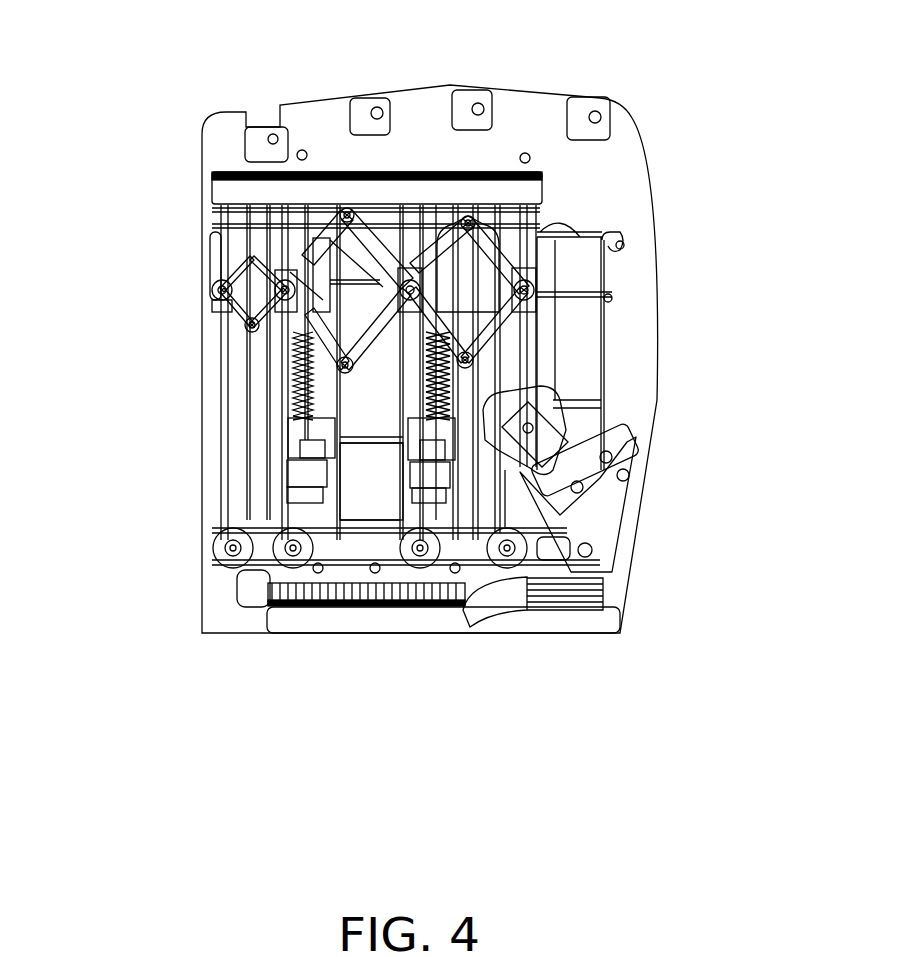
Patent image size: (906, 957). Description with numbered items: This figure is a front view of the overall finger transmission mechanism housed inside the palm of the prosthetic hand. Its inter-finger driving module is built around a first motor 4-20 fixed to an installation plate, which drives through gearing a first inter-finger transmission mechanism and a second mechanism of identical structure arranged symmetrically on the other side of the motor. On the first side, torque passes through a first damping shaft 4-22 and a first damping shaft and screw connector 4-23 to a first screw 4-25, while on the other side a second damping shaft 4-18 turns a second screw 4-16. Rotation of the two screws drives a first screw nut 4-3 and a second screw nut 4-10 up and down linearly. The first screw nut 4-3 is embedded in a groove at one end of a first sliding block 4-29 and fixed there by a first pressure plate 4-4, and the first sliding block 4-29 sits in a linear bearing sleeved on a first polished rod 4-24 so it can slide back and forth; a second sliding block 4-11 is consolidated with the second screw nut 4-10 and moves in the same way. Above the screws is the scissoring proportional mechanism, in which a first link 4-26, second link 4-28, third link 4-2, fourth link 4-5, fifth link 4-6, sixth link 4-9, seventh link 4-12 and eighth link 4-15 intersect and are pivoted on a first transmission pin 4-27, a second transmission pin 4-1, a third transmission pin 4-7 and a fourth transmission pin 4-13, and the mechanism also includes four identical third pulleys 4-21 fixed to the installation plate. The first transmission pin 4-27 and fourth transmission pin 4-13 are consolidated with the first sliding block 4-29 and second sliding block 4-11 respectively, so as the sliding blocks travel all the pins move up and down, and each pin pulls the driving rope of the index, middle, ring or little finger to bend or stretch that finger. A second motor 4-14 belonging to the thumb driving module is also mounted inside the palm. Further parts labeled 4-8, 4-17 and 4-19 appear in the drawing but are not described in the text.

The second transmission pin 4-1 is at (205, 225).
The third link 4-2 is at (260, 262).
The first screw nut 4-3 is at (288, 268).
The first pressure plate 4-4 is at (310, 278).
The fourth link 4-5 is at (322, 230).
The fifth link 4-6 is at (362, 234).
The third transmission pin 4-7 is at (390, 282).
The guide shaft 4-8 is at (428, 262).
The sixth link 4-9 is at (450, 268).
The second screw nut 4-10 is at (487, 268).
The second sliding block 4-11 is at (517, 258).
The seventh link 4-12 is at (538, 288).
The fourth transmission pin 4-13 is at (600, 255).
The second motor 4-14 is at (580, 303).
The eighth link 4-15 is at (490, 343).
The second screw 4-16 is at (448, 386).
The pawl 4-17 is at (490, 477).
The second damping shaft 4-18 is at (445, 518).
The frame 4-19 is at (355, 515).
The first motor 4-20 is at (268, 608).
The third pulleys 4-21 is at (205, 547).
The first damping shaft 4-22 is at (288, 498).
The first damping shaft and screw connector 4-23 is at (287, 438).
The first polished rod 4-24 is at (247, 414).
The first screw 4-25 is at (290, 384).
The first link 4-26 is at (250, 312).
The first transmission pin 4-27 is at (203, 292).
The second link 4-28 is at (262, 283).
The first sliding block 4-29 is at (205, 243).